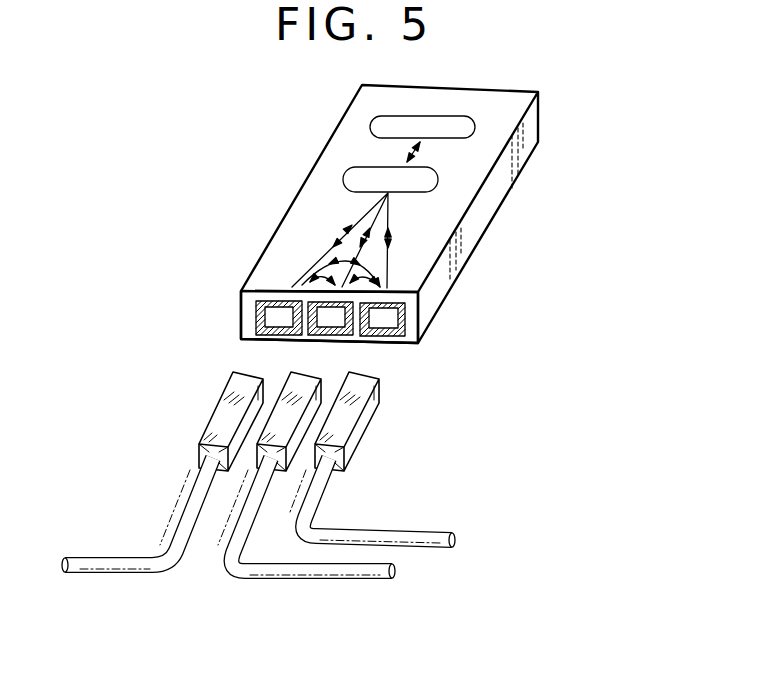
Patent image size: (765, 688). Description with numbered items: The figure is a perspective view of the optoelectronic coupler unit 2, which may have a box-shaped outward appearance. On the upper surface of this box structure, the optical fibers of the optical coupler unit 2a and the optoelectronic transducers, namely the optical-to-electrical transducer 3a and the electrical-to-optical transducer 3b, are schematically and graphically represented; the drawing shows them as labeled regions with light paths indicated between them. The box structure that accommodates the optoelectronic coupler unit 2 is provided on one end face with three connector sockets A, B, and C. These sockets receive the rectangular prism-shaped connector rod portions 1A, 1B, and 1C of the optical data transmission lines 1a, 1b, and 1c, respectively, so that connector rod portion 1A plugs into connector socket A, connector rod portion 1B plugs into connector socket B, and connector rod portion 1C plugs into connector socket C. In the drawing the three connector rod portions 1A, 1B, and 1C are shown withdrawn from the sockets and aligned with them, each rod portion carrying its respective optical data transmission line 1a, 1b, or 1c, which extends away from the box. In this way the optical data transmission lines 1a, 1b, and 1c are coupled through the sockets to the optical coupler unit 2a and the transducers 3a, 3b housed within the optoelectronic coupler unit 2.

The optoelectronic coupler unit 2 is at (510, 158).
The optical coupler unit 2a is at (410, 237).
The optical-to-electrical transducer 3a is at (338, 139).
The electrical-to-optical transducer 3b is at (332, 180).
The connector socket A is at (388, 317).
The connector socket B is at (328, 320).
The connector socket C is at (278, 317).
The connector rod portion 1A is at (362, 427).
The connector rod portion 1B is at (302, 394).
The connector rod portion 1C is at (232, 410).
The optical data transmission line 1a is at (428, 548).
The optical data transmission line 1b is at (283, 575).
The optical data transmission line 1c is at (117, 565).